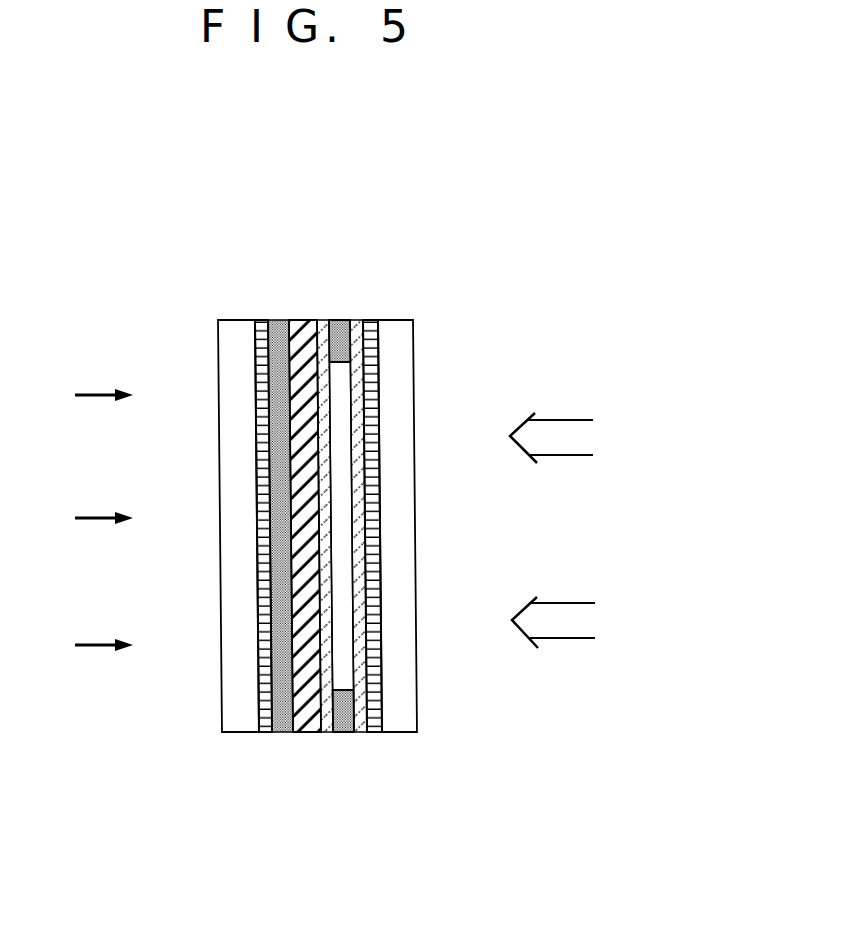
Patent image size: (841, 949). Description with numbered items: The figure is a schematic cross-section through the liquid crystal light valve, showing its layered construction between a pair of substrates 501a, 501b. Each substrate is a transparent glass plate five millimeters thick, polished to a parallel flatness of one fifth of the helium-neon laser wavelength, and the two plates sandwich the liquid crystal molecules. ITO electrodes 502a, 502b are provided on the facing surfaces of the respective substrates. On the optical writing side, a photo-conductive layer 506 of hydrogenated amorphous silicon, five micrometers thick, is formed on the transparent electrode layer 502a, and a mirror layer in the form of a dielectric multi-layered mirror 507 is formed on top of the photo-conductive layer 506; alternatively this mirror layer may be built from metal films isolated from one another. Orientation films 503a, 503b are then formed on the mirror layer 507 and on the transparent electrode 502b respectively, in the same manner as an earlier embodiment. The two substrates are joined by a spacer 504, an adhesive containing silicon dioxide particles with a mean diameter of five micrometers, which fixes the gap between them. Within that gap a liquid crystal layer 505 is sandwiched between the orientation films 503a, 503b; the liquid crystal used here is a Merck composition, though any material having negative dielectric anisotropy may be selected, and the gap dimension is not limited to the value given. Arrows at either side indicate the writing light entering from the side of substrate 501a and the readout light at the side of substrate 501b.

The substrate 501a is at (232, 335).
The substrate 501b is at (412, 335).
The ITO electrode 502a is at (262, 733).
The ITO electrode 502b is at (381, 733).
The orientation film 503a is at (322, 733).
The orientation film 503b is at (362, 733).
The spacer 504 is at (345, 330).
The liquid crystal layer 505 is at (340, 632).
The photo-conductive layer 506 is at (272, 323).
The dielectric multi-layered mirror 507 is at (308, 330).